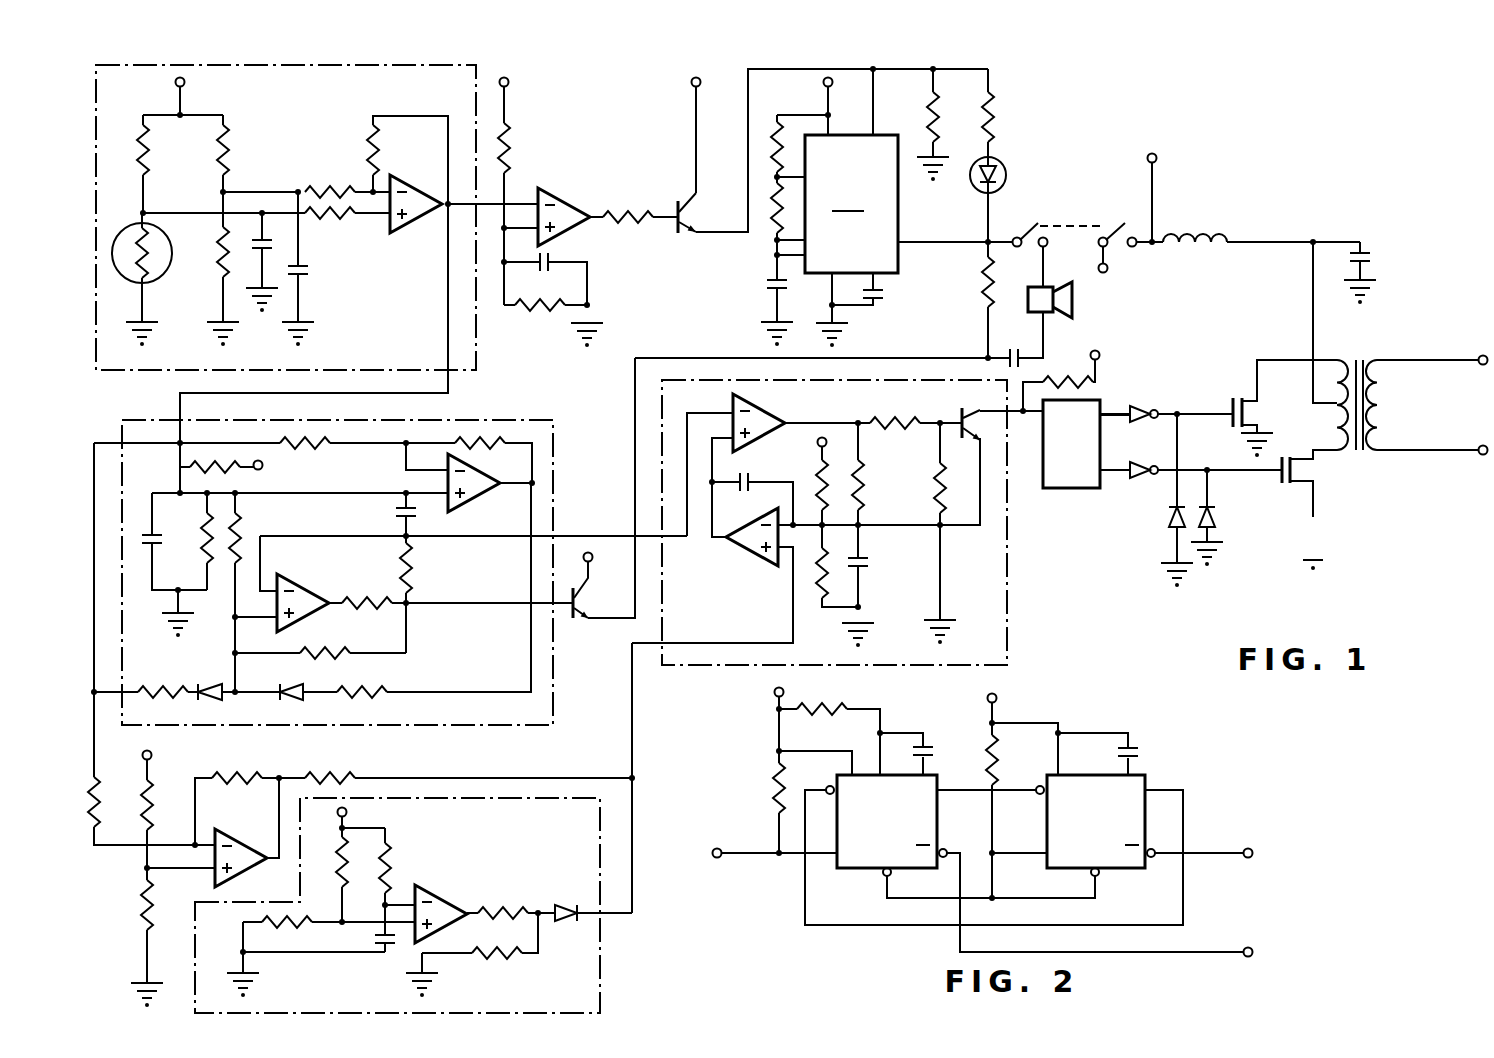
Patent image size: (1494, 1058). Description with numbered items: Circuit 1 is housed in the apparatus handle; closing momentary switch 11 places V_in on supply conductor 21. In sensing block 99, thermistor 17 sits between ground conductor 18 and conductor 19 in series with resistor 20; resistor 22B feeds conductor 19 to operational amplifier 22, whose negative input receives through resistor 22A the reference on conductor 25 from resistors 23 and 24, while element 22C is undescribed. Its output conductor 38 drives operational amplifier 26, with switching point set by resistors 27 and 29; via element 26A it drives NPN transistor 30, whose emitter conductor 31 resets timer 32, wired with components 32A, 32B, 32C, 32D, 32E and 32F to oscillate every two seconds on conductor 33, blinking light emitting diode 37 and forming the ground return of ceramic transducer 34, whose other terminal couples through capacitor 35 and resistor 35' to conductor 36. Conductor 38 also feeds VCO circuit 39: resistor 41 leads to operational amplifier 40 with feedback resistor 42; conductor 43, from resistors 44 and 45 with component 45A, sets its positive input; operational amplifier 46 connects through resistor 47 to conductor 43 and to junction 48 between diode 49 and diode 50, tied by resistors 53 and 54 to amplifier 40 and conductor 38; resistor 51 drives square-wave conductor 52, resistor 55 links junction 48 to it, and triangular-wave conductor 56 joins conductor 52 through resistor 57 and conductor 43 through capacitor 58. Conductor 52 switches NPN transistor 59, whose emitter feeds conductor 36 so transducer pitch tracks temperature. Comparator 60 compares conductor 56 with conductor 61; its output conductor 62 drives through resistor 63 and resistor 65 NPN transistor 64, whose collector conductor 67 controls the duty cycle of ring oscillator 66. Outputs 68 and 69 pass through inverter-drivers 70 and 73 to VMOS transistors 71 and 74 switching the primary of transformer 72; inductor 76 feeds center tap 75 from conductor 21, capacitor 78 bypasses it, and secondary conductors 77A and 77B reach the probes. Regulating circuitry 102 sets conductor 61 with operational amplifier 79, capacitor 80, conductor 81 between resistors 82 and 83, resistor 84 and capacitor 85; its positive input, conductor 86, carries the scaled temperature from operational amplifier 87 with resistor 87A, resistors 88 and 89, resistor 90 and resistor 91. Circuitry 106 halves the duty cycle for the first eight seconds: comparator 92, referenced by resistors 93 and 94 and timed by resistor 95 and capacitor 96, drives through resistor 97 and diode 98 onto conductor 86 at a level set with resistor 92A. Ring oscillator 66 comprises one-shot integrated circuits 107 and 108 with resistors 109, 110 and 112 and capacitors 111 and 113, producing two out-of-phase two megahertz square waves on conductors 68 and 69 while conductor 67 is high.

In FIG. 1, the circuit 1 is at (1076, 603).
In FIG. 1, the momentary switch 11 is at (1033, 222).
In FIG. 1, the thermistor 17 is at (172, 246).
In FIG. 1, the ground conductor 18 is at (150, 322).
In FIG. 1, the conductor 19 is at (163, 212).
In FIG. 1, the resistor 20 is at (148, 128).
In FIG. 1, the supply voltage conductor 21 is at (176, 84).
In FIG. 1, the operational amplifier 22 is at (426, 186).
In FIG. 1, the resistor 22A is at (314, 188).
In FIG. 1, the resistor 22B is at (330, 218).
In FIG. 1, the feedback resistor 22C is at (407, 160).
In FIG. 1, the resistor 23 is at (212, 265).
In FIG. 1, the resistor 24 is at (232, 130).
In FIG. 1, the conductor 25 is at (299, 188).
In FIG. 1, the operational amplifier 26 is at (553, 198).
In FIG. 1, the resistor 26A is at (645, 226).
In FIG. 1, the resistor 27 is at (508, 142).
In FIG. 1, the resistor 29 is at (536, 316).
In FIG. 1, the NPN transistor 30 is at (677, 198).
In FIG. 1, the conductor 31 is at (875, 120).
In FIG. 1, the integrated circuit timer 32 is at (900, 265).
In FIG. 1, the resistor 32A is at (773, 132).
In FIG. 1, the resistor 32B is at (772, 228).
In FIG. 1, the capacitor 32C is at (770, 297).
In FIG. 1, the capacitor 32D is at (878, 300).
In FIG. 1, the resistor 32E is at (938, 110).
In FIG. 1, the resistor 32F is at (995, 102).
In FIG. 1, the conductor 33 is at (932, 242).
In FIG. 1, the ceramic transducer 34 is at (1050, 288).
In FIG. 1, the capacitor 35 is at (1007, 339).
In FIG. 1, the resistor 35' is at (966, 300).
In FIG. 1, the conductor 36 is at (684, 358).
In FIG. 1, the light emitting diode 37 is at (1006, 168).
In FIG. 1, the conductor 38 is at (457, 380).
In FIG. 1, the voltage controlled oscillator circuit 39 is at (465, 648).
In FIG. 1, the operational amplifier 40 is at (478, 498).
In FIG. 1, the resistor 41 is at (301, 449).
In FIG. 1, the resistor 42 is at (497, 450).
In FIG. 1, the conductor 43 is at (300, 495).
In FIG. 1, the resistor 44 is at (215, 461).
In FIG. 1, the resistor 45 is at (200, 523).
In FIG. 1, the capacitor 45A is at (158, 548).
In FIG. 1, the operational amplifier 46 is at (298, 581).
In FIG. 1, the resistor 47 is at (240, 531).
In FIG. 1, the junction 48 is at (240, 690).
In FIG. 1, the diode 49 is at (300, 690).
In FIG. 1, the diode 50 is at (210, 688).
In FIG. 1, the resistor 51 is at (362, 598).
In FIG. 1, the conductor 52 is at (505, 601).
In FIG. 1, the resistor 53 is at (390, 692).
In FIG. 1, the resistor 54 is at (148, 688).
In FIG. 1, the resistor 55 is at (325, 650).
In FIG. 1, the conductor 56 is at (577, 535).
In FIG. 1, the resistor 57 is at (413, 557).
In FIG. 1, the capacitor 58 is at (401, 504).
In FIG. 1, the NPN transistor 59 is at (590, 625).
In FIG. 1, the comparator 60 is at (758, 409).
In FIG. 1, the conductor 61 is at (714, 540).
In FIG. 1, the conductor 62 is at (808, 420).
In FIG. 1, the resistor 63 is at (897, 418).
In FIG. 1, the NPN transistor 64 is at (980, 440).
In FIG. 1, the resistor 65 is at (937, 470).
In FIG. 1, the ring oscillator circuit 66 is at (1060, 490).
In FIG. 2, the ring oscillator circuit 66 is at (884, 933).
In FIG. 1, the conductor 67 is at (1000, 410).
In FIG. 2, the conductor 67 is at (719, 849).
In FIG. 1, the output conductor 68 is at (1076, 380).
In FIG. 2, the output conductor 68 is at (1250, 848).
In FIG. 1, the output conductor 69 is at (1114, 468).
In FIG. 2, the output conductor 69 is at (1250, 947).
In FIG. 1, the inverter-driver circuit 70 is at (1148, 408).
In FIG. 1, the VMOS power field effect transistor 71 is at (1241, 398).
In FIG. 1, the transformer 72 is at (1362, 452).
In FIG. 1, the inverter-driver 73 is at (1150, 479).
In FIG. 1, the VMOS power transistor 74 is at (1294, 486).
In FIG. 1, the center tap electrode 75 is at (1310, 262).
In FIG. 1, the inductor 76 is at (1197, 262).
In FIG. 1, the conductor 77A is at (1412, 360).
In FIG. 1, the conductor 77B is at (1426, 452).
In FIG. 1, the capacitor 78 is at (1368, 253).
In FIG. 1, the operational amplifier 79 is at (752, 568).
In FIG. 1, the capacitor 80 is at (750, 479).
In FIG. 1, the conductor 81 is at (865, 527).
In FIG. 1, the resistor 82 is at (820, 477).
In FIG. 1, the resistor 83 is at (826, 572).
In FIG. 1, the resistor 84 is at (865, 478).
In FIG. 1, the capacitor 85 is at (868, 566).
In FIG. 1, the conductor 86 is at (630, 733).
In FIG. 1, the operational amplifier 87 is at (239, 833).
In FIG. 1, the resistor 87A is at (104, 800).
In FIG. 1, the resistor 88 is at (145, 790).
In FIG. 1, the resistor 89 is at (142, 885).
In FIG. 1, the resistor 90 is at (330, 776).
In FIG. 1, the resistor 91 is at (236, 776).
In FIG. 1, the comparator 92 is at (438, 894).
In FIG. 1, the resistor 92A is at (497, 960).
In FIG. 1, the resistor 93 is at (338, 863).
In FIG. 1, the resistor 94 is at (285, 930).
In FIG. 1, the resistor 95 is at (392, 863).
In FIG. 1, the capacitor 96 is at (386, 952).
In FIG. 1, the resistor 97 is at (490, 910).
In FIG. 1, the diode 98 is at (567, 905).
In FIG. 1, the temperature sensing circuit 99 is at (325, 104).
In FIG. 1, the circuitry 102 is at (955, 577).
In FIG. 1, the circuitry 106 is at (530, 991).
In FIG. 2, the one-shot integrated circuit 107 is at (940, 819).
In FIG. 2, the one-shot integrated circuit 108 is at (1150, 791).
In FIG. 2, the resistor 109 is at (772, 791).
In FIG. 2, the resistor 110 is at (820, 714).
In FIG. 2, the capacitor 111 is at (932, 746).
In FIG. 2, the resistor 112 is at (1000, 751).
In FIG. 2, the capacitor 113 is at (1138, 747).